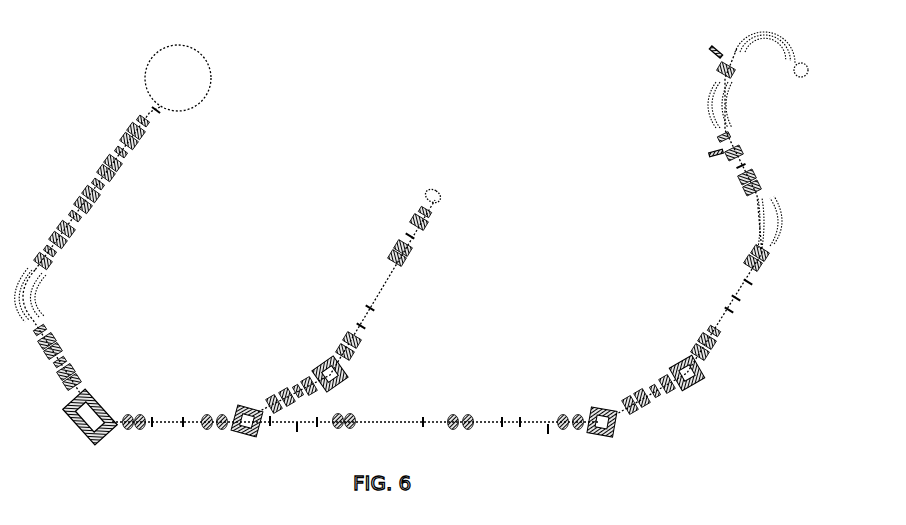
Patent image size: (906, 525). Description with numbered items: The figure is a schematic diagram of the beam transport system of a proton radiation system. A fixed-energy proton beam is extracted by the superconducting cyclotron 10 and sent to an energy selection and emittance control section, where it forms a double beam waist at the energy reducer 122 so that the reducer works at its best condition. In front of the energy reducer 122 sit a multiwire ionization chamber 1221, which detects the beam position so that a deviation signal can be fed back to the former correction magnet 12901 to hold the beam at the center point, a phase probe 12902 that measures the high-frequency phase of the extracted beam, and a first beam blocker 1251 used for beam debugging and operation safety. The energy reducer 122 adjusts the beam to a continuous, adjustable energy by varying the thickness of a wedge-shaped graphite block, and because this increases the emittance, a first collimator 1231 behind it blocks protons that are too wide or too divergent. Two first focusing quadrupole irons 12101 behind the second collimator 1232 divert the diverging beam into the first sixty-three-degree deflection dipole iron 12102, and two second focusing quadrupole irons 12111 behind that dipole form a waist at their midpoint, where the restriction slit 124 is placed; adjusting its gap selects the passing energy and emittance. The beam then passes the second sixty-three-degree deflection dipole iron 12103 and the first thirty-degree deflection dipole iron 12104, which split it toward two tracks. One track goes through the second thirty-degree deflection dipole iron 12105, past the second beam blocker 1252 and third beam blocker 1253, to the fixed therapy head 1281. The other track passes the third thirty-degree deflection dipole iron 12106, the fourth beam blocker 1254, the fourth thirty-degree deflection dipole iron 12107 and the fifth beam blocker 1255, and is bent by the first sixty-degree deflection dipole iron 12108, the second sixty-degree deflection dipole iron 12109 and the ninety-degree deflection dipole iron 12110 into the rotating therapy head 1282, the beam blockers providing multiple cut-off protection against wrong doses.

The superconducting cyclotron 10 is at (213, 64).
The energy reducer 122 is at (85, 200).
The multiwire ionization chamber 1221 is at (82, 193).
The first beam blocker 1251 is at (133, 161).
The former correction magnet 12901 is at (117, 193).
The phase probe 12902 is at (95, 210).
The first collimator 1231 is at (83, 230).
The second collimator 1232 is at (67, 250).
The first focusing quadrupole iron 12101 is at (48, 278).
The first 63-degree deflection dipole iron 12102 is at (43, 315).
The second focusing quadrupole iron 12111 is at (62, 342).
The restriction slit 124 is at (62, 355).
The second 63-degree deflection dipole iron 12103 is at (98, 405).
The first 30-degree deflection dipole iron 12104 is at (240, 407).
The second 30-degree deflection dipole iron 12105 is at (347, 377).
The third 30-degree deflection dipole iron 12106 is at (605, 407).
The fourth 30-degree deflection dipole iron 12107 is at (683, 363).
The first 60-degree deflection dipole iron 12108 is at (757, 228).
The second 60-degree deflection dipole iron 12109 is at (703, 108).
The 90-degree deflection dipole iron 12110 is at (742, 40).
The second beam blocker 1252 is at (370, 333).
The third beam blocker 1253 is at (420, 235).
The fourth beam blocker 1254 is at (518, 407).
The fifth beam blocker 1255 is at (730, 287).
The fixed therapy head 1281 is at (443, 192).
The rotating therapy head 1282 is at (795, 74).